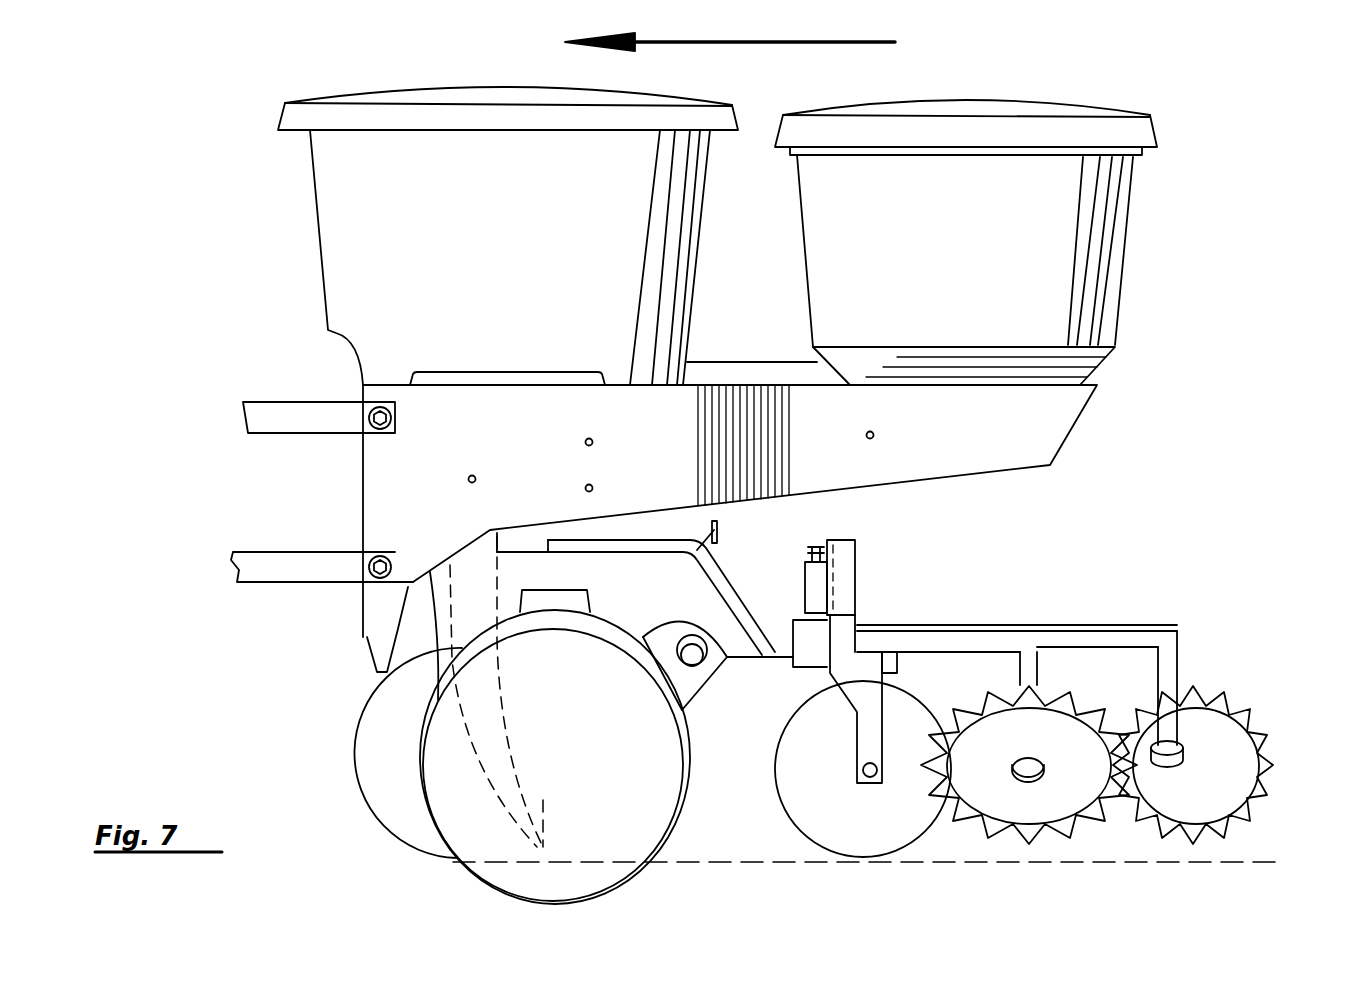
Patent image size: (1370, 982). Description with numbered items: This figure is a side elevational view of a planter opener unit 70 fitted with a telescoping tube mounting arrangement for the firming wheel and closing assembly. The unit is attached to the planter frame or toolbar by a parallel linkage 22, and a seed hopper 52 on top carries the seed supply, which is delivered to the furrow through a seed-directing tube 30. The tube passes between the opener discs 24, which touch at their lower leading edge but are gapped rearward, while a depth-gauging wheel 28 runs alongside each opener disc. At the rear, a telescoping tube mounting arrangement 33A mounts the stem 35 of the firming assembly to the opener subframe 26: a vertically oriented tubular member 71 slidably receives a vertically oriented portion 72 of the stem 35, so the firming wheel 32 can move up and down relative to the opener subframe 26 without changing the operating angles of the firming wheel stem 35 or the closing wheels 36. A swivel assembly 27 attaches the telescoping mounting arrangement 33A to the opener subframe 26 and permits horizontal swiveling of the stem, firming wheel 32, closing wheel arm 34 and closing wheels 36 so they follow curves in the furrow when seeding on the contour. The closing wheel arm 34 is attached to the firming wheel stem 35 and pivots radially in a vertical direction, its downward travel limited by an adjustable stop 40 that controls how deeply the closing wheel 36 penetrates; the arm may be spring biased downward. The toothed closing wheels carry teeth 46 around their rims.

The parallel linkage 22 is at (240, 422).
The opener disc 24 is at (350, 780).
The opener subframe 26 is at (705, 585).
The swivel assembly 27 is at (817, 543).
The depth-gauging wheel 28 is at (500, 860).
The seed-directing tube 30 is at (470, 603).
The firming wheel 32 is at (893, 837).
The telescoping tube mounting arrangement 33A is at (848, 613).
The closing wheel arm 34 is at (1052, 633).
The firming wheel stem 35 is at (865, 735).
The closing wheel 36 is at (1130, 798).
The adjustable stop 40 is at (888, 660).
The closing wheel teeth 46 is at (1070, 835).
The seed hopper 52 is at (365, 256).
The planter opener unit 70 is at (1180, 226).
The tubular member 71 is at (848, 558).
The vertically oriented portion 72 is at (840, 643).